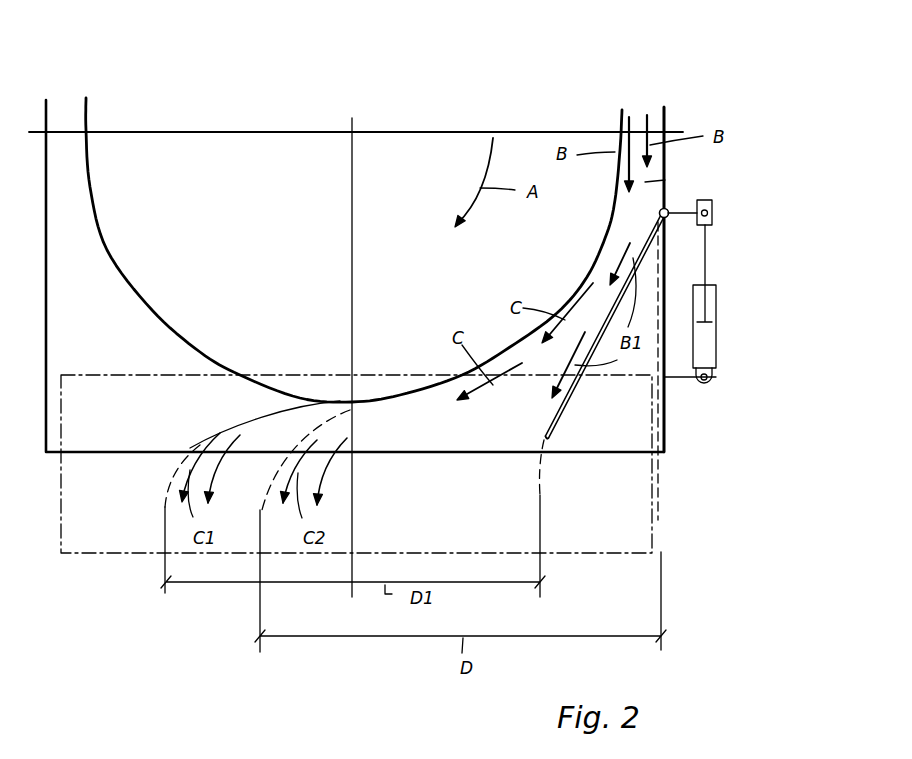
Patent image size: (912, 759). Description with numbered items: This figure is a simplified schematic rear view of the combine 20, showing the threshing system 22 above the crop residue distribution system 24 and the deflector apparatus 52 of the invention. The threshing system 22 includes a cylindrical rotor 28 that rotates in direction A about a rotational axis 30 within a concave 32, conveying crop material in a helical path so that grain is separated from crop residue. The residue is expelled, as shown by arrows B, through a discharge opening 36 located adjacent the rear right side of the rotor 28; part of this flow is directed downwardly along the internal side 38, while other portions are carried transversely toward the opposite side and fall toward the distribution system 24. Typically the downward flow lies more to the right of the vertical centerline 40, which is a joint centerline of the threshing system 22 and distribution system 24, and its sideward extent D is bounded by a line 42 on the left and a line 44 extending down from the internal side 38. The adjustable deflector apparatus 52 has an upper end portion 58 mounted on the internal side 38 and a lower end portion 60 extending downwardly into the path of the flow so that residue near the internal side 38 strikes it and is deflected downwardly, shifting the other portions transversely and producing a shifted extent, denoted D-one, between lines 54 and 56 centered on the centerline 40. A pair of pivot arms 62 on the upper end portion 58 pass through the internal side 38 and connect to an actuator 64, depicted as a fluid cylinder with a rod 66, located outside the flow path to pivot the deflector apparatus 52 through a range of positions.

The combine 20 is at (728, 76).
The threshing system 22 is at (676, 116).
The crop residue distribution system 24 is at (655, 542).
The cylindrical rotor 28 is at (627, 110).
The rotational axis 30 is at (357, 128).
The concave 32 is at (667, 103).
The discharge opening 36 is at (647, 182).
The internal side 38 is at (663, 350).
The vertical centerline 40 is at (355, 292).
The line 42 is at (258, 604).
The line 44 is at (663, 605).
The adjustable deflector apparatus 52 is at (607, 307).
The line 54 is at (166, 530).
The line 56 is at (540, 523).
The upper end portion 58 is at (652, 227).
The lower end portion 60 is at (547, 424).
The pivot arms 62 is at (683, 207).
The actuator 64 is at (717, 343).
The rod 66 is at (707, 255).